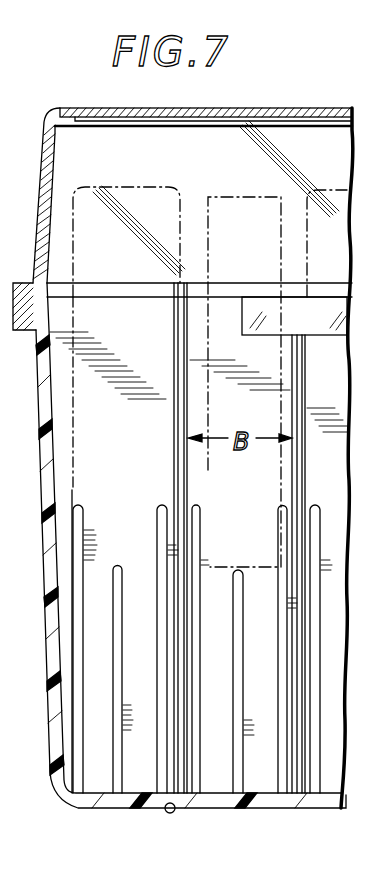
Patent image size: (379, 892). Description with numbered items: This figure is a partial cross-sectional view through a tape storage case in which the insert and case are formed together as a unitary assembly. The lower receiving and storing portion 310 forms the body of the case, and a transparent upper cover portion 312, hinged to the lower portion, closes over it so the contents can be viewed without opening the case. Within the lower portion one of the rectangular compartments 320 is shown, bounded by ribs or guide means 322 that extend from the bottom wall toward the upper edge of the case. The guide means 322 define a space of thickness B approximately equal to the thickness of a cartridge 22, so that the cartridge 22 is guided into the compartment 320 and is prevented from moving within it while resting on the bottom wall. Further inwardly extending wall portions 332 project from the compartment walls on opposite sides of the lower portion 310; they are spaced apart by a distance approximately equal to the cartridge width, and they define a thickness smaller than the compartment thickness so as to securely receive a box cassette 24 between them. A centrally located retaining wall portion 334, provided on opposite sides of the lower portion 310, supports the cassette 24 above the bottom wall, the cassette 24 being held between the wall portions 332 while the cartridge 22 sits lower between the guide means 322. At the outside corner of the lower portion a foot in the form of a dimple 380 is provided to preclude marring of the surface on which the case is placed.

The cartridge 22 is at (168, 187).
The cassette 24 is at (257, 197).
The lower receiving and storing portion 310 is at (40, 684).
The upper cover portion 312 is at (34, 142).
The compartment 320 is at (122, 146).
The guide means 322 is at (300, 483).
The further inwardly extending wall portions 332 is at (157, 525).
The retaining wall portion 334 is at (134, 562).
The dimple 380 is at (178, 817).